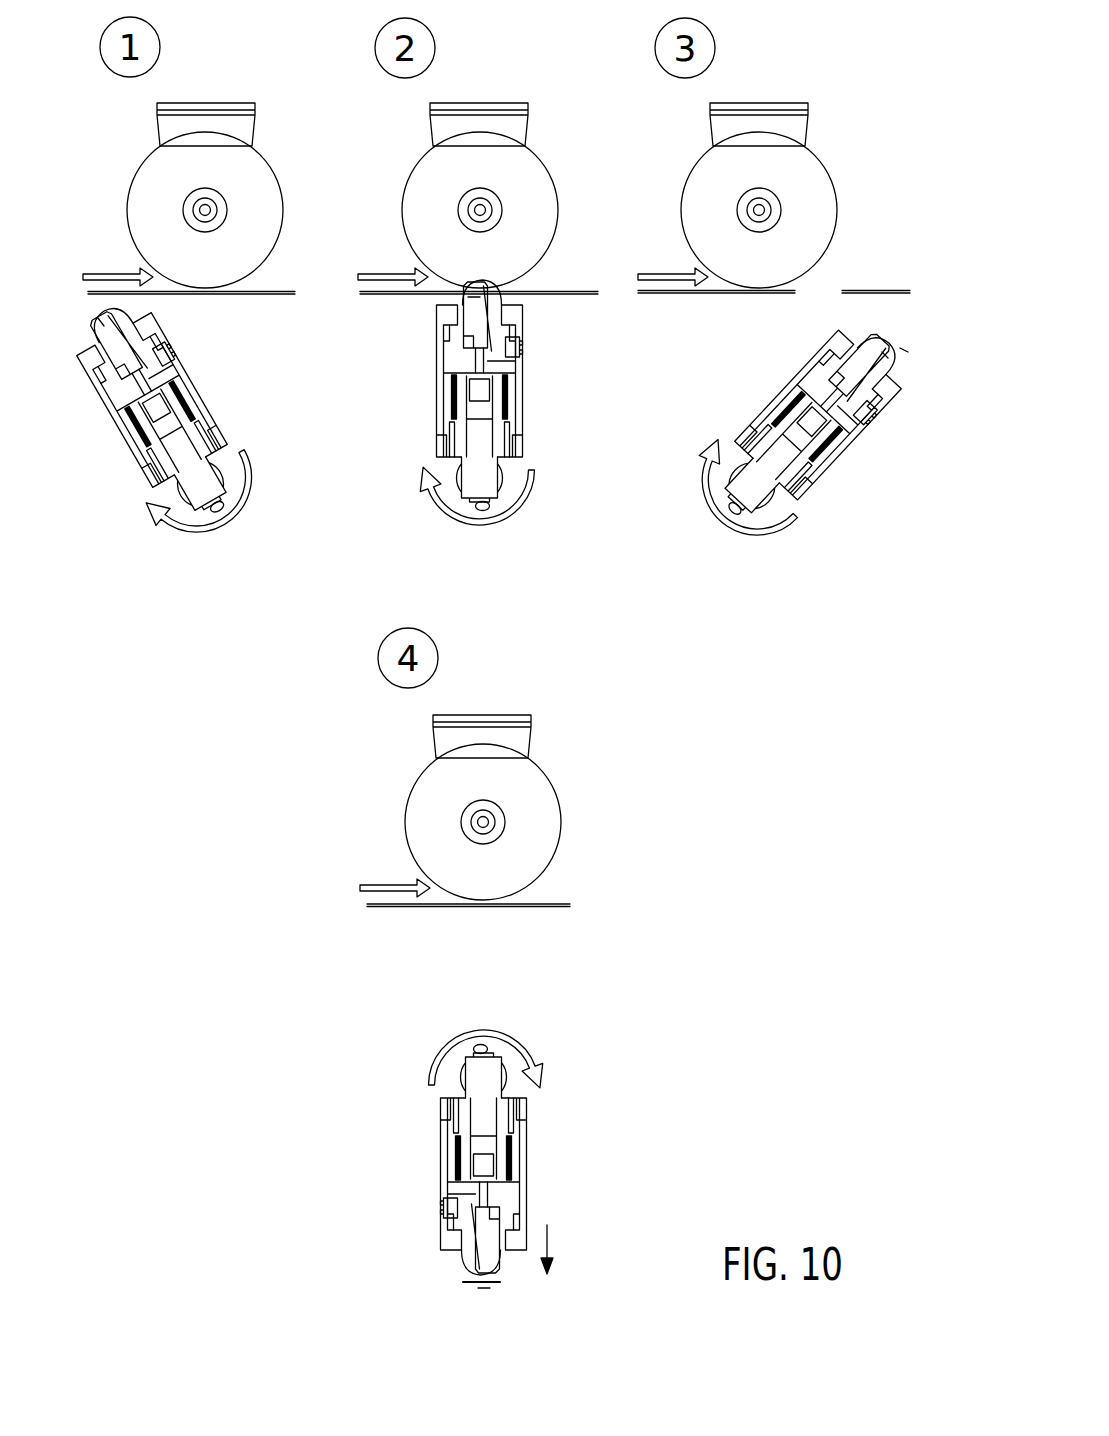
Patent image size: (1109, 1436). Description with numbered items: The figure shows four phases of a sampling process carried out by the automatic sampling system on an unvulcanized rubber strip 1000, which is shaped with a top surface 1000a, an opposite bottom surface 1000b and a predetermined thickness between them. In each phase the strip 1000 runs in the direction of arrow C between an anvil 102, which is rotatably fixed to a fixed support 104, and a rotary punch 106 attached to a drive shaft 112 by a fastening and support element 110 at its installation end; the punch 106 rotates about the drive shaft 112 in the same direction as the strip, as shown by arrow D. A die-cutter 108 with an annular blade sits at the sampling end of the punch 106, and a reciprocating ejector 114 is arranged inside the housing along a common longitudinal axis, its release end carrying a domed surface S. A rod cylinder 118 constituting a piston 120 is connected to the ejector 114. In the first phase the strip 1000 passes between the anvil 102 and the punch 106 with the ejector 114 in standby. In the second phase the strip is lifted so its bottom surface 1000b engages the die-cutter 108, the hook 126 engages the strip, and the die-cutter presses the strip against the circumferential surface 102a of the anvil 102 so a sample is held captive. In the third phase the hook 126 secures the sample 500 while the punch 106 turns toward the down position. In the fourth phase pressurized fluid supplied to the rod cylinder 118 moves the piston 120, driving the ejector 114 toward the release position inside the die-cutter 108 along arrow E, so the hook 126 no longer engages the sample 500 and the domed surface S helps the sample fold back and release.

The anvil 102 is at (262, 168).
The circumferential surface of the anvil 102a is at (284, 211).
The fixed support 104 is at (214, 100).
The rotary punch 106 is at (124, 430).
The die-cutter 108 is at (83, 350).
The fastening and support element 110 is at (437, 450).
The drive shaft 112 is at (221, 462).
The reciprocating ejector 114 is at (112, 363).
The rod cylinder 118 is at (506, 393).
The piston 120 is at (455, 405).
The hook 126 is at (146, 331).
The sample 500 is at (906, 351).
The rubber strip 1000 is at (90, 292).
The top surface of the rubber strip 1000a is at (290, 290).
The bottom surface of the rubber strip 1000b is at (279, 299).
The direction of movement of the rubber strip C is at (395, 574).
The rotation direction of the punch D is at (472, 763).
The ejector movement direction E is at (554, 1249).
The domed surface S is at (86, 330).